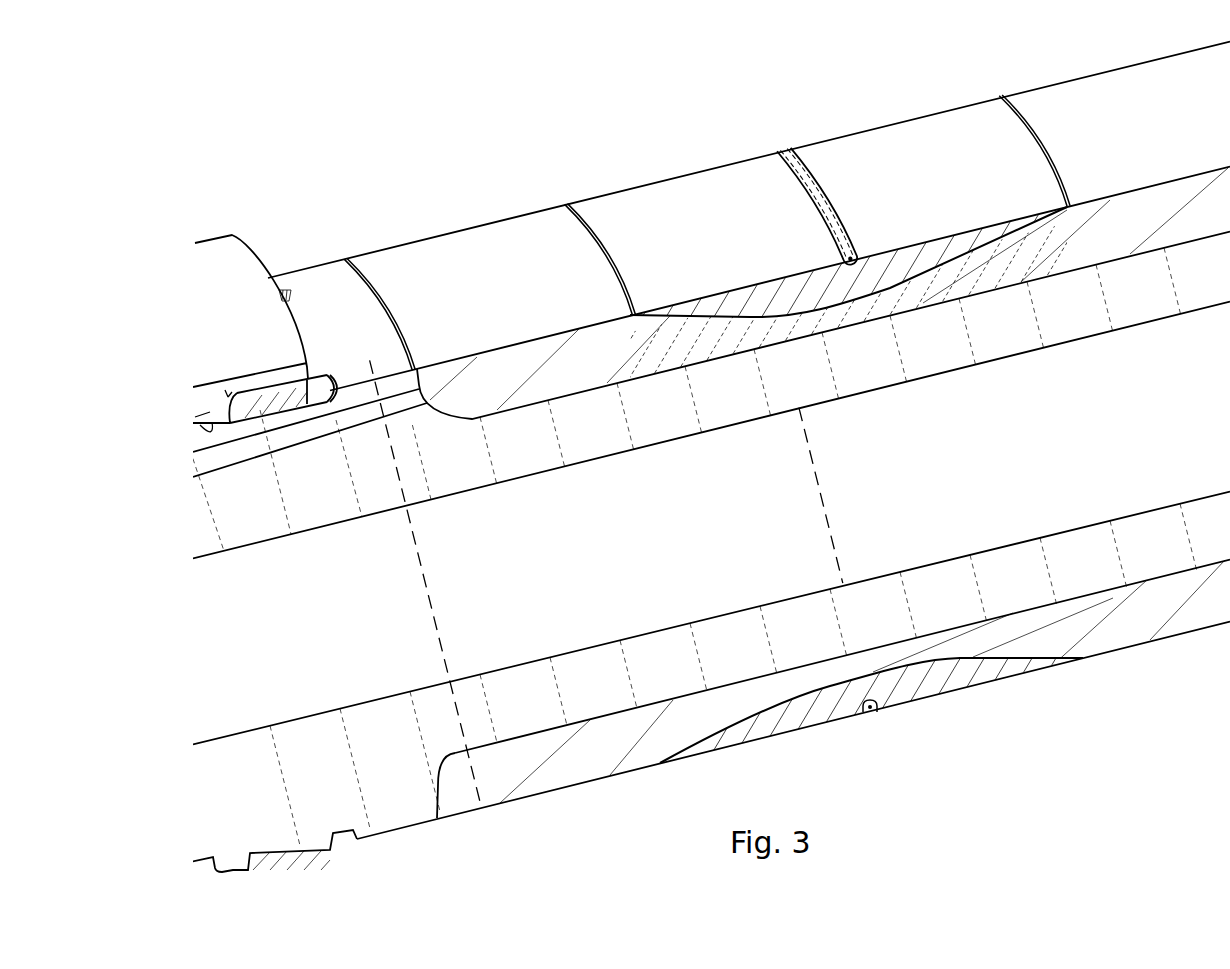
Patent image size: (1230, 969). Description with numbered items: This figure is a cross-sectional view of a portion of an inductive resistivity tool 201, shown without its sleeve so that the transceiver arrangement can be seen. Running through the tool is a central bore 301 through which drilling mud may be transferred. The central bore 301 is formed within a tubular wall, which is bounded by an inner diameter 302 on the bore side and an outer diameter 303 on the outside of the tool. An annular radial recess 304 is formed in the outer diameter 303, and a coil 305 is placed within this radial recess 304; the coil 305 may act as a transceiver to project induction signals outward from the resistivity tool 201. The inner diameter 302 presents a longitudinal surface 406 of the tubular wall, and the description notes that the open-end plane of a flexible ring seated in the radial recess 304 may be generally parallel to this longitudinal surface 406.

The resistivity tool 201 is at (422, 182).
The central bore 301 is at (592, 567).
The inner diameter 302 is at (822, 487).
The outer diameter 303 is at (430, 610).
The annular radial recess 304 is at (1000, 240).
The coil 305 is at (773, 152).
The longitudinal surface 406 is at (391, 512).